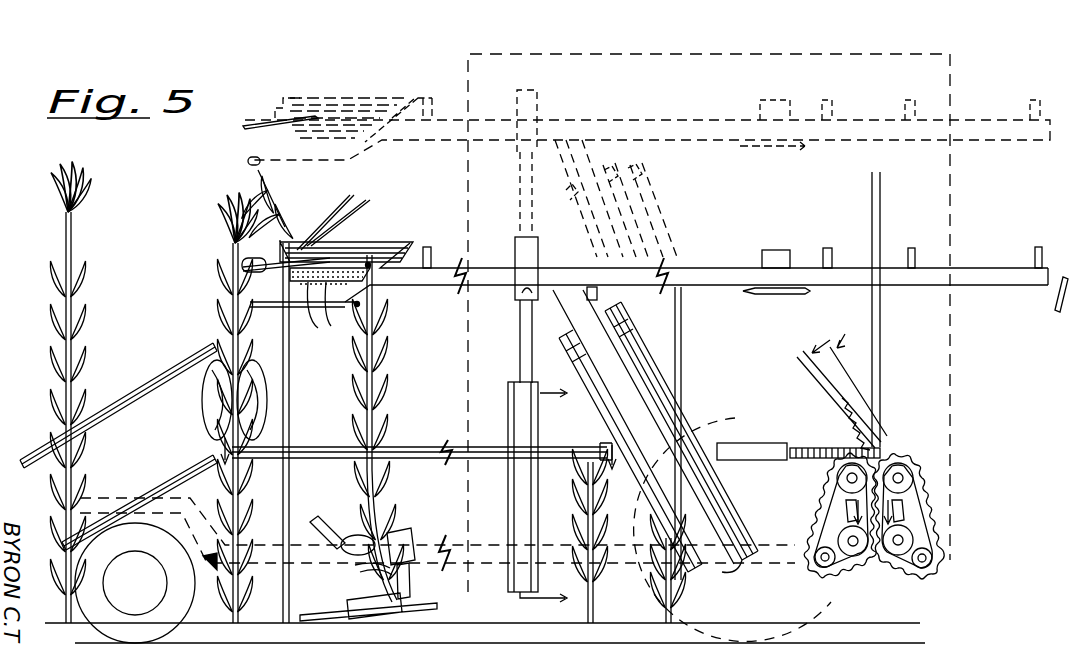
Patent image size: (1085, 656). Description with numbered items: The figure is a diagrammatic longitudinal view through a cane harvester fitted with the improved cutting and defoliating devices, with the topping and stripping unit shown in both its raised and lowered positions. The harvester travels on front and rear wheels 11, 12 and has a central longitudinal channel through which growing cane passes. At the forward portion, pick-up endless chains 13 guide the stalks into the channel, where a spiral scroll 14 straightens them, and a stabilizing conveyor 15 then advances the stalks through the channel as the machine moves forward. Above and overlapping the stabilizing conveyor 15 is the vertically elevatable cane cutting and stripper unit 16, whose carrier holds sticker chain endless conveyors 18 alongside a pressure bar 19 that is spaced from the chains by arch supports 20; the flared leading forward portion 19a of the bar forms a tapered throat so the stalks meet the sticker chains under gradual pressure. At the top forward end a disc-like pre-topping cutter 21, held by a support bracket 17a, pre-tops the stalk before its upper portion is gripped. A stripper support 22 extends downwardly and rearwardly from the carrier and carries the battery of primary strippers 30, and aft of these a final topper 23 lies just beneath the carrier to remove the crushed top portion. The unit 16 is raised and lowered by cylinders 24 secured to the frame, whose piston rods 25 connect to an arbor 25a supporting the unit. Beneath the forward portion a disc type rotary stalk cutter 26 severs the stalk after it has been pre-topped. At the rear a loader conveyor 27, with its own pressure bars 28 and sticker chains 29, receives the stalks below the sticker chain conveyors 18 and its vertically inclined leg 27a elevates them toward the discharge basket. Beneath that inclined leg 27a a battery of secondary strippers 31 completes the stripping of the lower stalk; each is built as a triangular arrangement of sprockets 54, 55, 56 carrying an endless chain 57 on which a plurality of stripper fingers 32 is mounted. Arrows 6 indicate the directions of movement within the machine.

The direction arrow 6 is at (415, 463).
The front wheel 11 is at (178, 590).
The rear wheel 12 is at (787, 637).
The pick-up endless chains 13 is at (138, 378).
The spiral scroll 14 is at (205, 405).
The stabilizing conveyor 15 is at (320, 446).
The cane cutting and stripper unit 16 is at (737, 260).
The support bracket 17a is at (412, 243).
The sticker chain endless conveyors 18 is at (346, 290).
The pressure bar 19 is at (415, 282).
The leading forward portion of pressure bar 19a is at (248, 308).
The arch supports 20 is at (432, 254).
The pre-topping cutter 21 is at (242, 264).
The stripper support 22 is at (645, 410).
The final topper 23 is at (780, 250).
The cylinders 24 is at (510, 422).
The piston rods 25 is at (520, 339).
The arbor 25a is at (538, 246).
The rotary stalk cutter 26 is at (425, 608).
The loader conveyor 27 is at (832, 446).
The vertically inclined leg of loader conveyor 27a is at (818, 352).
The pressure bars 28 is at (730, 462).
The sticker chains 29 is at (810, 462).
The primary strippers 30 is at (732, 529).
The secondary strippers 31 is at (853, 565).
The stripper fingers 32 is at (927, 463).
The sprocket 54 is at (912, 473).
The sprocket 55 is at (914, 537).
The sprocket 56 is at (930, 558).
The endless chain 57 is at (937, 513).